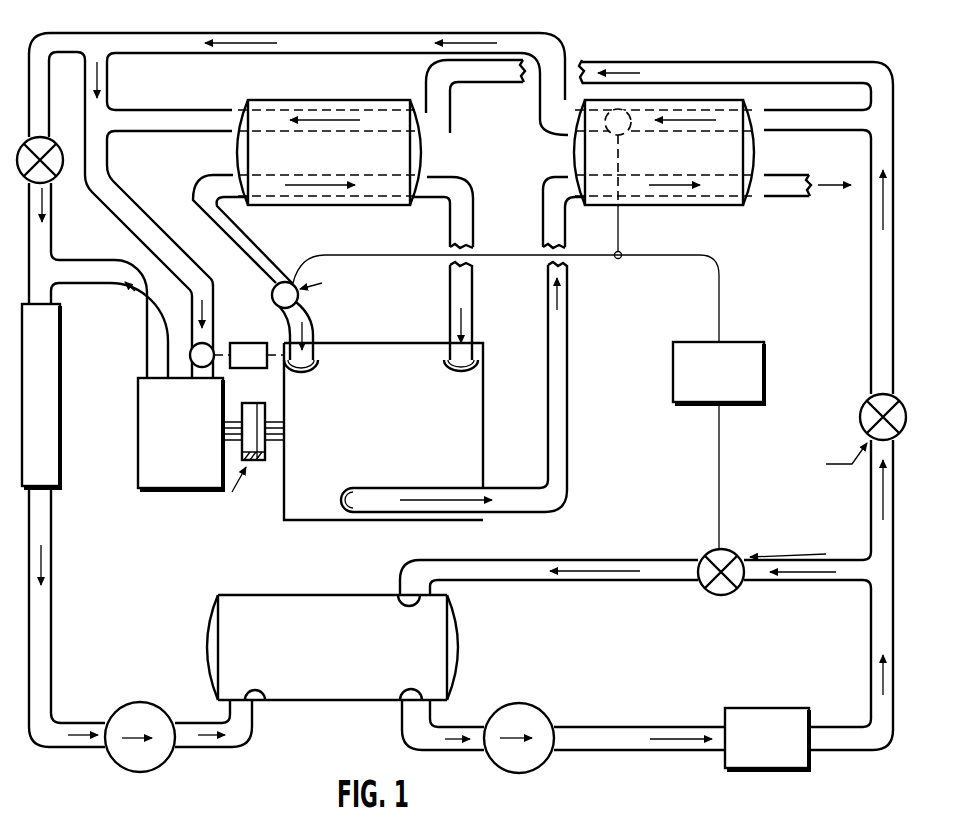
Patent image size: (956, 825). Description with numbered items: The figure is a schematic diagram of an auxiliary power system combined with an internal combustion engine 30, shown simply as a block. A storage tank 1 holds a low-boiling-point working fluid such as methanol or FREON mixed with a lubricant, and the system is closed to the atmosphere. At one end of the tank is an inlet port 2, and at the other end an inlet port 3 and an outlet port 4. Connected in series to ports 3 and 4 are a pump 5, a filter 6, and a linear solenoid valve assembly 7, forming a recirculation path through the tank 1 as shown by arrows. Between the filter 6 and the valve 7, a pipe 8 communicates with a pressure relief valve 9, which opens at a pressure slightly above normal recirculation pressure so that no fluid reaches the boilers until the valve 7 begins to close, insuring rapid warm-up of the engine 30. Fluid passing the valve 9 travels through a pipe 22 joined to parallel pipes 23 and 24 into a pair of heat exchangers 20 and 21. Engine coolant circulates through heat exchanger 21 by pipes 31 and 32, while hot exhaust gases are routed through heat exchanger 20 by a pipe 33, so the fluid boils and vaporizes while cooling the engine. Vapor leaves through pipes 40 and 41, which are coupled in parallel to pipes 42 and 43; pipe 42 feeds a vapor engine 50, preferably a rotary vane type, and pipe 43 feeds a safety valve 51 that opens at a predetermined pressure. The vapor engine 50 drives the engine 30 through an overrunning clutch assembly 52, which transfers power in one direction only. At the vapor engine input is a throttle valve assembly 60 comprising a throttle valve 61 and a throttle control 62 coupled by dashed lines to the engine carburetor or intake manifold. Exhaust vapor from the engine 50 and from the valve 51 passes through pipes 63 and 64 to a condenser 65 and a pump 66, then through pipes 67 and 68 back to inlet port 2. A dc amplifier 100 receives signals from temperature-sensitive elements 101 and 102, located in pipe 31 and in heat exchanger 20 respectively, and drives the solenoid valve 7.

The storage tank 1 is at (320, 703).
The inlet port 2 is at (257, 705).
The inlet port 3 is at (406, 592).
The outlet port 4 is at (403, 705).
The pump 5 is at (550, 762).
The filter 6 is at (811, 760).
The linear solenoid valve assembly 7 is at (737, 589).
The pipe 8 is at (894, 534).
The pressure relief valve 9 is at (896, 438).
The heat exchanger 20 is at (707, 207).
The heat exchanger 21 is at (358, 206).
The pipe 22 is at (871, 294).
The pipe 23 is at (798, 132).
The pipe 24 is at (744, 62).
The internal combustion engine 30 is at (483, 516).
The pipe 31 is at (254, 251).
The pipe 32 is at (476, 231).
The pipe 33 is at (569, 360).
The pipe 40 is at (334, 54).
The pipe 41 is at (155, 110).
The pipe 42 is at (90, 193).
The pipe 43 is at (50, 100).
The vapor engine 50 is at (137, 451).
The safety valve 51 is at (50, 138).
The overrunning clutch assembly 52 is at (262, 461).
The throttle valve assembly 60 is at (216, 346).
The throttle valve 61 is at (193, 345).
The throttle control 62 is at (246, 369).
The pipe 63 is at (147, 322).
The pipe 64 is at (58, 250).
The condenser 65 is at (61, 433).
The pump 66 is at (140, 702).
The pipe 67 is at (52, 672).
The pipe 68 is at (253, 735).
The dc amplifier 100 is at (767, 386).
The temperature-sensitive element 101 is at (288, 282).
The temperature-sensitive element 102 is at (611, 135).